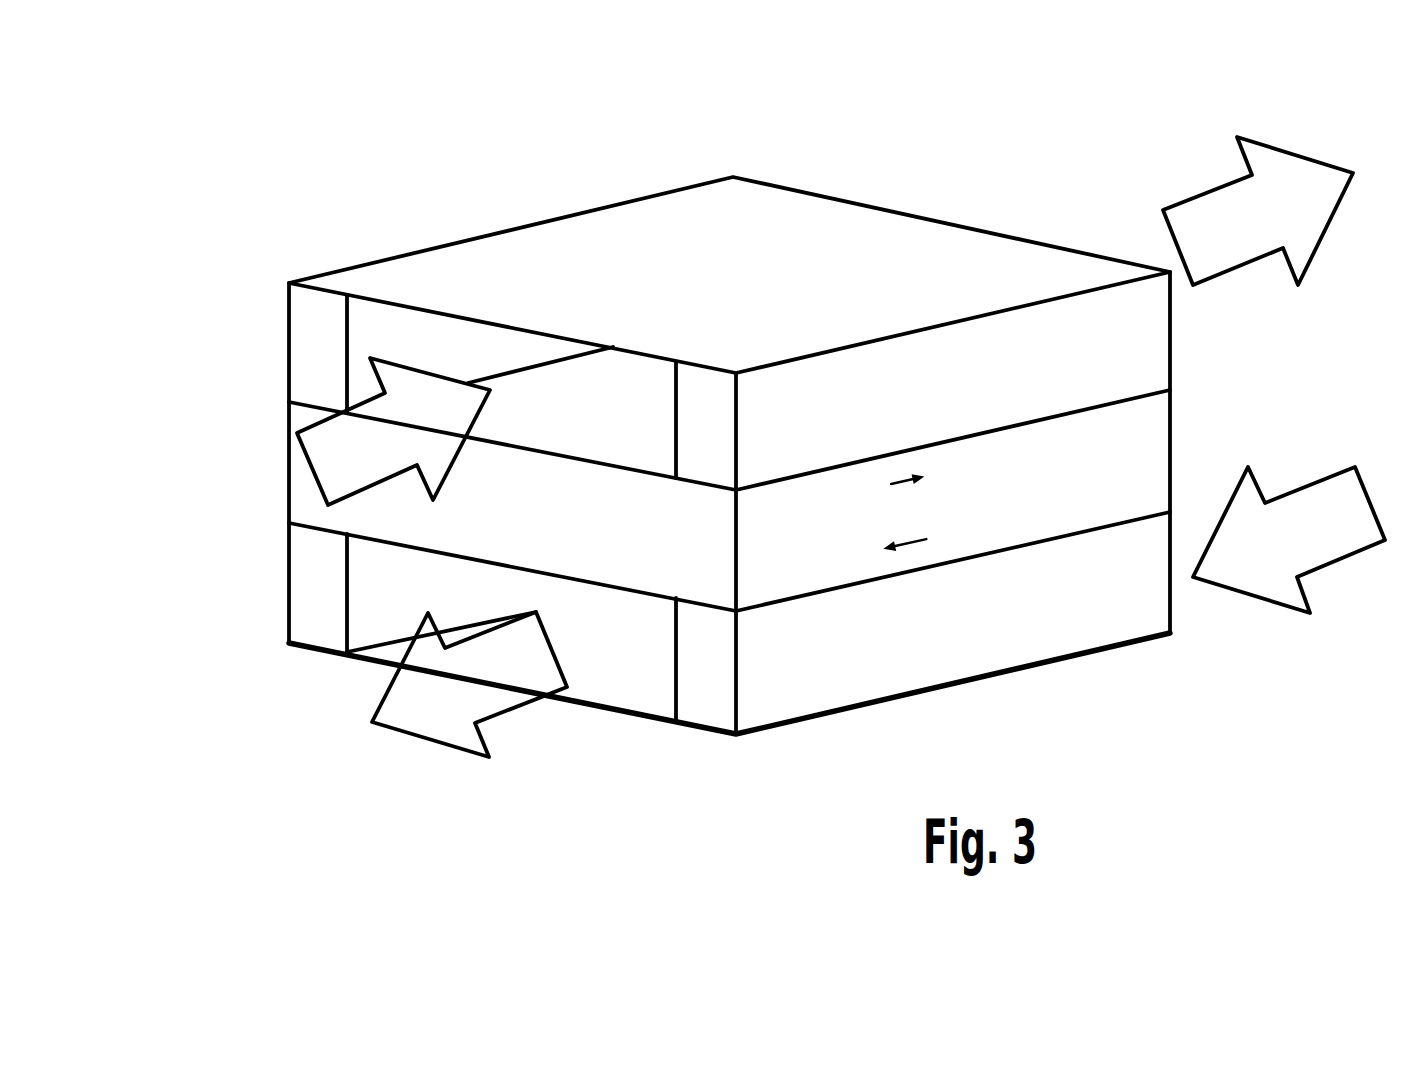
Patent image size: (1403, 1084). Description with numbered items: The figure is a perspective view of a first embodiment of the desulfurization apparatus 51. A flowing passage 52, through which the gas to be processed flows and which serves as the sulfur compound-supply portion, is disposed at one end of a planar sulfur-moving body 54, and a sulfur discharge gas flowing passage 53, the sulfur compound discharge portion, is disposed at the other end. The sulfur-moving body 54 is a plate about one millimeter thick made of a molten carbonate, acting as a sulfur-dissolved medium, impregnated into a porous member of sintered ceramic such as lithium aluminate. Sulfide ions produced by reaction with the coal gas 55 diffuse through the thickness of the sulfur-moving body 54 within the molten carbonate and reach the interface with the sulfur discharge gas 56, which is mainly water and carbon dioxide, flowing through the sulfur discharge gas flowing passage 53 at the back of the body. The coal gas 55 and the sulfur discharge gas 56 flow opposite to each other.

The desulfurization apparatus 51 is at (790, 148).
The flowing passage 52 is at (303, 345).
The sulfur discharge gas flowing passage 53 is at (715, 692).
The sulfur-moving body 54 is at (300, 507).
The coal gas 55 is at (320, 455).
The sulfur discharge gas 56 is at (420, 707).